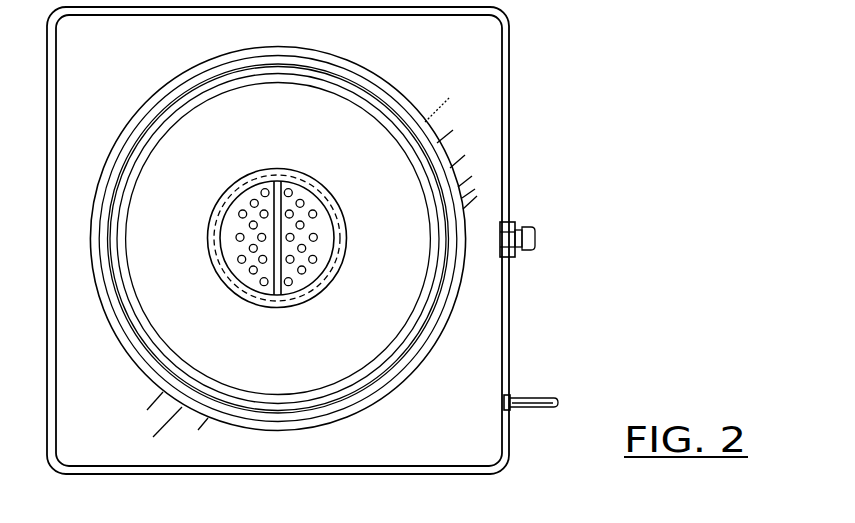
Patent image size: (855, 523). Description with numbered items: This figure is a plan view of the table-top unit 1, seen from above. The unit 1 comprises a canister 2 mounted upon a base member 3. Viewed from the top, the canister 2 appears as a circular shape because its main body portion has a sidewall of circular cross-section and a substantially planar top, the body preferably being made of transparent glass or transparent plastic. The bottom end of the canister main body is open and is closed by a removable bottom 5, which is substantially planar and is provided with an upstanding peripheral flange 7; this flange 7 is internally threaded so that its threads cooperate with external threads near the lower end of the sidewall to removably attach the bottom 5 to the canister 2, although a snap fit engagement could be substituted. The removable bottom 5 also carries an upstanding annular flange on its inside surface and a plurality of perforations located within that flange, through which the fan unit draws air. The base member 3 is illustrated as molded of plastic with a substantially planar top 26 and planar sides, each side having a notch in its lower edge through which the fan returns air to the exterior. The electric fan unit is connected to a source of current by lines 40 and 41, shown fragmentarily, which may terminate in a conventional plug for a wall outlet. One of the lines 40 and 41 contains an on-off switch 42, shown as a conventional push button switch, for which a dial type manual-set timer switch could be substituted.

The unit 1 is at (519, 62).
The canister 2 is at (375, 358).
The base member 3 is at (514, 36).
The removable bottom 5 is at (432, 128).
The upstanding peripheral flange 7 is at (449, 313).
The top 26 is at (470, 358).
The line 40 is at (548, 411).
The line 41 is at (543, 398).
The switch 42 is at (536, 236).